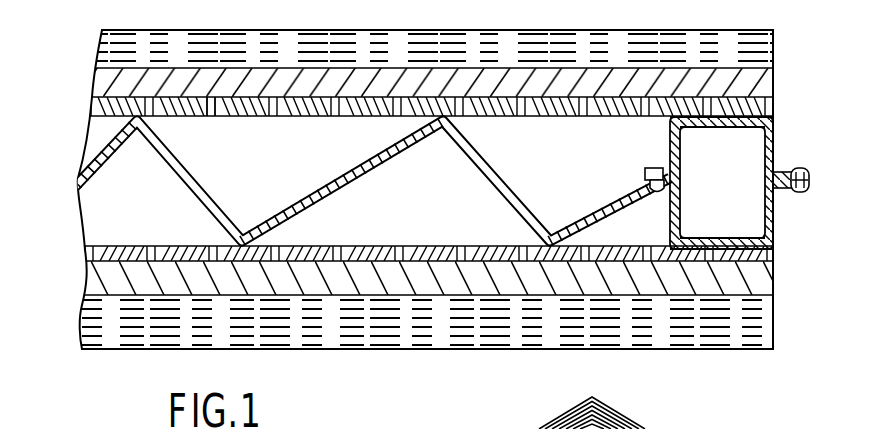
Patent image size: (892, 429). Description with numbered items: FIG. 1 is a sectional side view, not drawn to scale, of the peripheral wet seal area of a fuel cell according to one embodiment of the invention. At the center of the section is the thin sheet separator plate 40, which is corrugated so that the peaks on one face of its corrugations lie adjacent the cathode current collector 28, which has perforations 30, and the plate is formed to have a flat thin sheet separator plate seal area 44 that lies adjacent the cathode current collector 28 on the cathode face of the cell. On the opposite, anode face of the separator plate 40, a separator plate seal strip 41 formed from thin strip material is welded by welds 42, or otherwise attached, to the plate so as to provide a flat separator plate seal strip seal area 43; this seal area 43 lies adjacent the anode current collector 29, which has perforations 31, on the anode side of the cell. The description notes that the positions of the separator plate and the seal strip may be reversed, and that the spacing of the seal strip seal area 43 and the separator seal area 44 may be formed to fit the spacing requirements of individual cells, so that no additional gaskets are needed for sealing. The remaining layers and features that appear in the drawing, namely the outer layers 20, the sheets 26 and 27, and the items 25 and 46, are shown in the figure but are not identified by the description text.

The concrete layer 20 is at (110, 49).
The upper rigid sheet 26 is at (100, 83).
The lower rigid sheet 27 is at (92, 280).
The cathode current collector 28 is at (92, 254).
The anode current collector 29 is at (97, 108).
The perforations 30 is at (147, 245).
The perforations 31 is at (218, 116).
The thin sheet separator plate 40 is at (100, 140).
The separator plate seal strip 41 is at (774, 150).
The welds 42 is at (658, 168).
The separator plate seal strip seal area 43 is at (745, 114).
The thin sheet separator plate seal area 44 is at (774, 258).
The folded sheet 25 is at (620, 428).
The fold line 46 is at (550, 428).